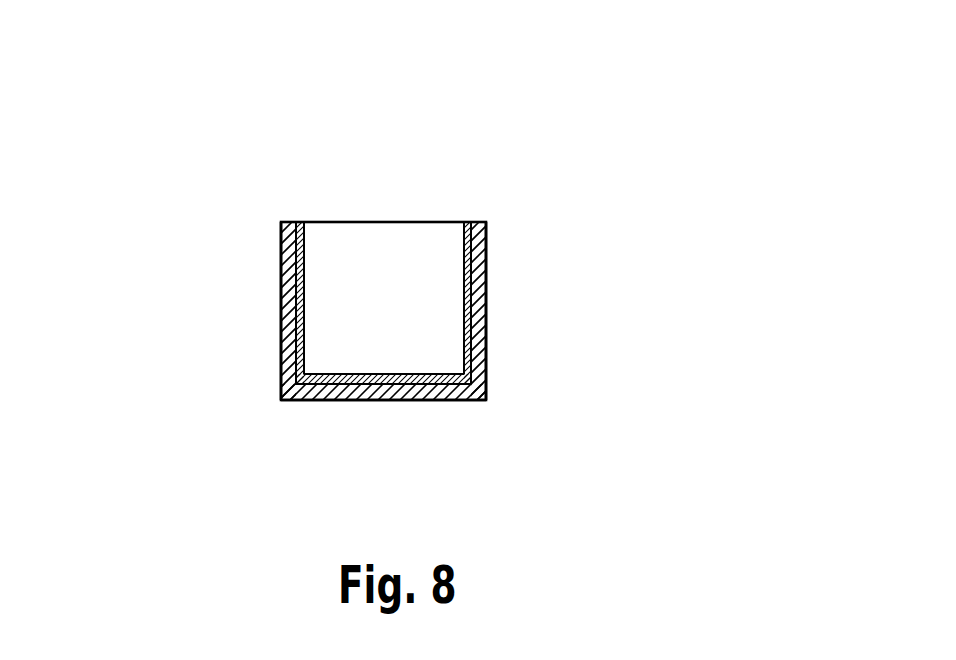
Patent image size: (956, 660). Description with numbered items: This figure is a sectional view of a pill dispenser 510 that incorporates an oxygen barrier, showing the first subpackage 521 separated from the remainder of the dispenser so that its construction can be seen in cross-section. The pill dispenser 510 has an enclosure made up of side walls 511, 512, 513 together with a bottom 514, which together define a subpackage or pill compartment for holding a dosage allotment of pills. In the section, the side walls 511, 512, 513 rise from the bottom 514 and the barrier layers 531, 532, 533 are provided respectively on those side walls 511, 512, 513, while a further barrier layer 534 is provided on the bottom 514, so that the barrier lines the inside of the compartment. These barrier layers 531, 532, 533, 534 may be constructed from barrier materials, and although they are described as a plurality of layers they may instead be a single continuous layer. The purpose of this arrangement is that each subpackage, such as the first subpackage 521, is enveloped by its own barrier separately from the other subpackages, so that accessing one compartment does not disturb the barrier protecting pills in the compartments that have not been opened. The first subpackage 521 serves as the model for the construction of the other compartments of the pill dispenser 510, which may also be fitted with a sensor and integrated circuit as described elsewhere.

The pill dispenser 510 is at (209, 126).
The side wall 511 is at (281, 292).
The side wall 512 is at (447, 222).
The side wall 513 is at (488, 282).
The bottom 514 is at (427, 400).
The first subpackage 521 is at (278, 353).
The barrier layer 531 is at (304, 265).
The barrier layer 532 is at (383, 252).
The barrier layer 533 is at (465, 313).
The barrier layer 534 is at (348, 374).